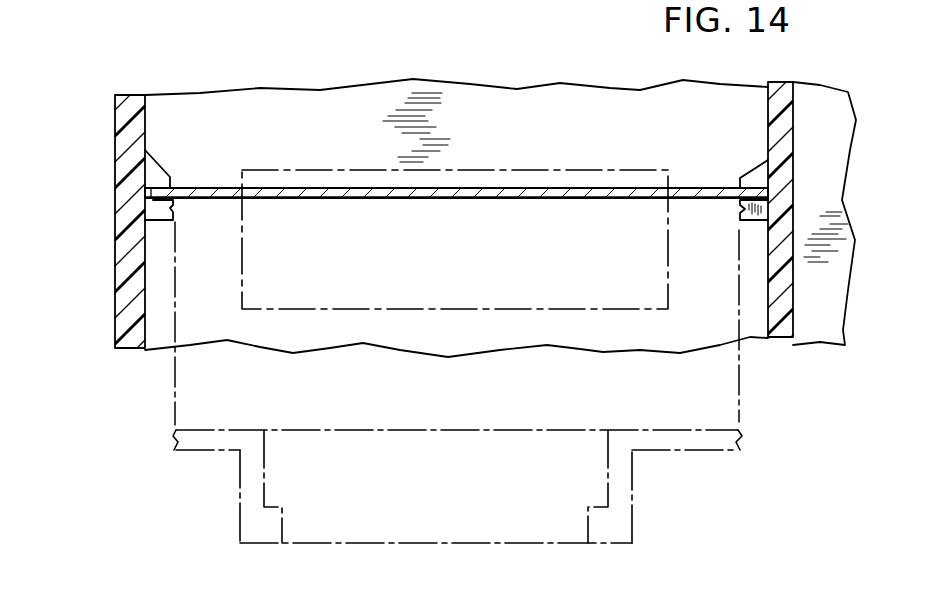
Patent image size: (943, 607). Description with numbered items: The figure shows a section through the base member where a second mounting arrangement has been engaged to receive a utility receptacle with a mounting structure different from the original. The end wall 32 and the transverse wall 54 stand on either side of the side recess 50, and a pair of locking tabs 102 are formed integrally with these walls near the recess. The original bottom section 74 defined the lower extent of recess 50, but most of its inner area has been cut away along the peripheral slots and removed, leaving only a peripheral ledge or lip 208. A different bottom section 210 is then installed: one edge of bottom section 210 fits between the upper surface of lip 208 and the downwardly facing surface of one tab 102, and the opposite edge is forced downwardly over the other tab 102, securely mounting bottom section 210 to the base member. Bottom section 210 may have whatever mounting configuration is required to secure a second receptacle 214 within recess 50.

The end wall 32 is at (115, 142).
The side recess 50 is at (478, 112).
The transverse wall 54 is at (795, 135).
The bottom section 74 is at (266, 428).
The locking tab 102 is at (157, 163).
The peripheral ledge or lip 208 is at (736, 208).
The bottom section 210 is at (552, 184).
The second receptacle 214 is at (537, 310).